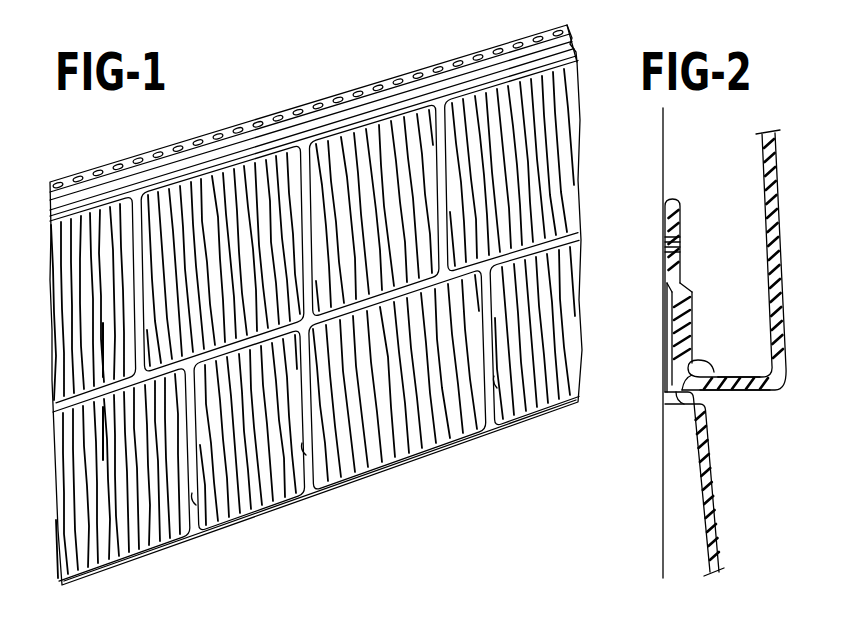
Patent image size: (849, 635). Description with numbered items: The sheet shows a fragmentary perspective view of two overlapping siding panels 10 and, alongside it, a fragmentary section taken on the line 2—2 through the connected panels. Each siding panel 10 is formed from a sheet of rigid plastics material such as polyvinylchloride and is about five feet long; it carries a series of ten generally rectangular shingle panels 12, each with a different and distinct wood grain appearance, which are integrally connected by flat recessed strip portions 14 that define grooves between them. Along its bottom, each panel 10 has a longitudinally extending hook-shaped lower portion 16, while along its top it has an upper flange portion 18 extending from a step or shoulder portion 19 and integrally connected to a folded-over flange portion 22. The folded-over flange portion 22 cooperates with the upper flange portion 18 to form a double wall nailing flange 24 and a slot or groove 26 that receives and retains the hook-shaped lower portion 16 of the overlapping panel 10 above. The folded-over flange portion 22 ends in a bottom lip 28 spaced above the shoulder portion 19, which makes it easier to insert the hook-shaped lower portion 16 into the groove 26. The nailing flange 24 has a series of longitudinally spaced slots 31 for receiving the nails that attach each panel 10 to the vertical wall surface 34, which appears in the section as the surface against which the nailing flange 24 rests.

In FIG. 1, the siding panel 10 is at (577, 167).
In FIG. 2, the siding panel 10 is at (784, 239).
In FIG. 1, the shingle panel 12 is at (455, 150).
In FIG. 1, the flat recessed strip portion 14 is at (137, 263).
In FIG. 2, the hook-shaped lower portion 16 is at (752, 392).
In FIG. 2, the upper flange portion 18 is at (667, 322).
In FIG. 2, the shoulder portion 19 is at (683, 407).
In FIG. 1, the folded-over flange portion 22 is at (472, 82).
In FIG. 2, the folded-over flange portion 22 is at (692, 328).
In FIG. 1, the double wall nailing flange 24 is at (195, 143).
In FIG. 2, the double wall nailing flange 24 is at (682, 213).
In FIG. 2, the groove 26 is at (671, 291).
In FIG. 1, the bottom lip 28 is at (577, 43).
In FIG. 2, the bottom lip 28 is at (703, 372).
In FIG. 1, the slot 31 is at (140, 167).
In FIG. 2, the slot 31 is at (681, 252).
In FIG. 2, the vertical wall surface 34 is at (666, 553).
In FIG. 1, the section line 2 is at (95, 452).